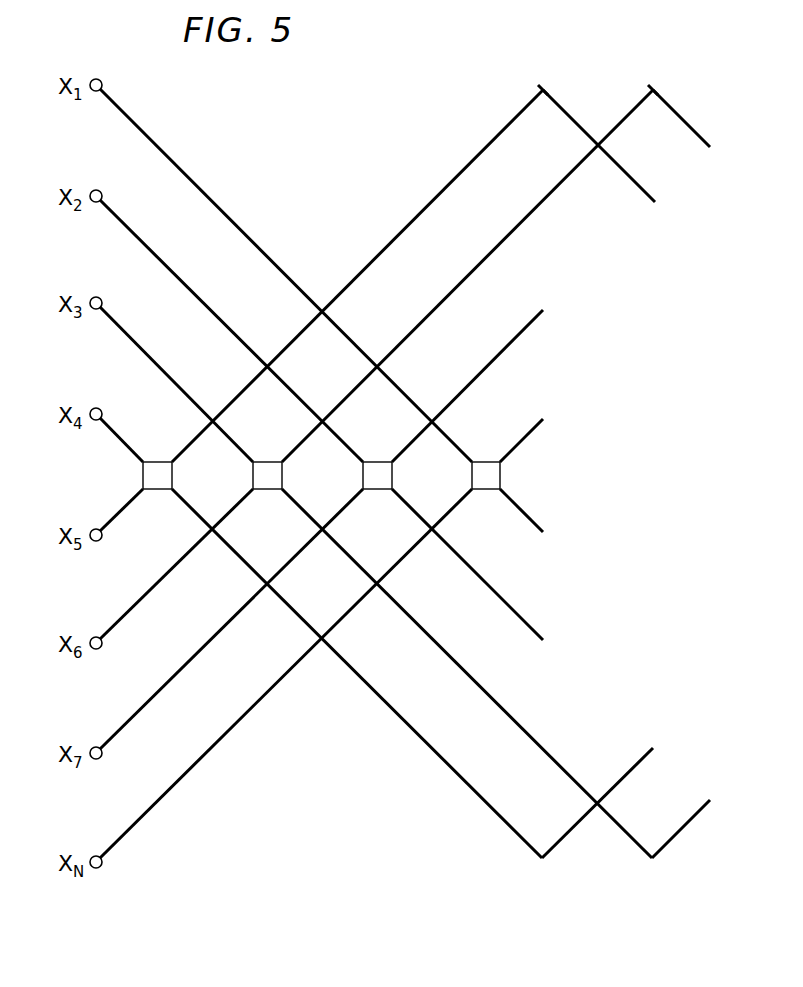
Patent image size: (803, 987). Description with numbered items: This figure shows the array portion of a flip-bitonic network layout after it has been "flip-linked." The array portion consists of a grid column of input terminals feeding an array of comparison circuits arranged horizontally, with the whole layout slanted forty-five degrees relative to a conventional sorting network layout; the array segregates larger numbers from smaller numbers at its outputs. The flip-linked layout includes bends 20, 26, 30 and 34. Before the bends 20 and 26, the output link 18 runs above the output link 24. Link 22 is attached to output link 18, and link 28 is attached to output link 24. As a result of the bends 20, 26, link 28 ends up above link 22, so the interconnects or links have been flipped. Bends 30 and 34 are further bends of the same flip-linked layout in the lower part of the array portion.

The output link 18 is at (520, 114).
The bend 20 is at (543, 90).
The link 22 is at (566, 112).
The output link 24 is at (556, 187).
The bend 26 is at (653, 90).
The link 28 is at (689, 126).
The bend 30 is at (542, 862).
The bend 34 is at (652, 862).